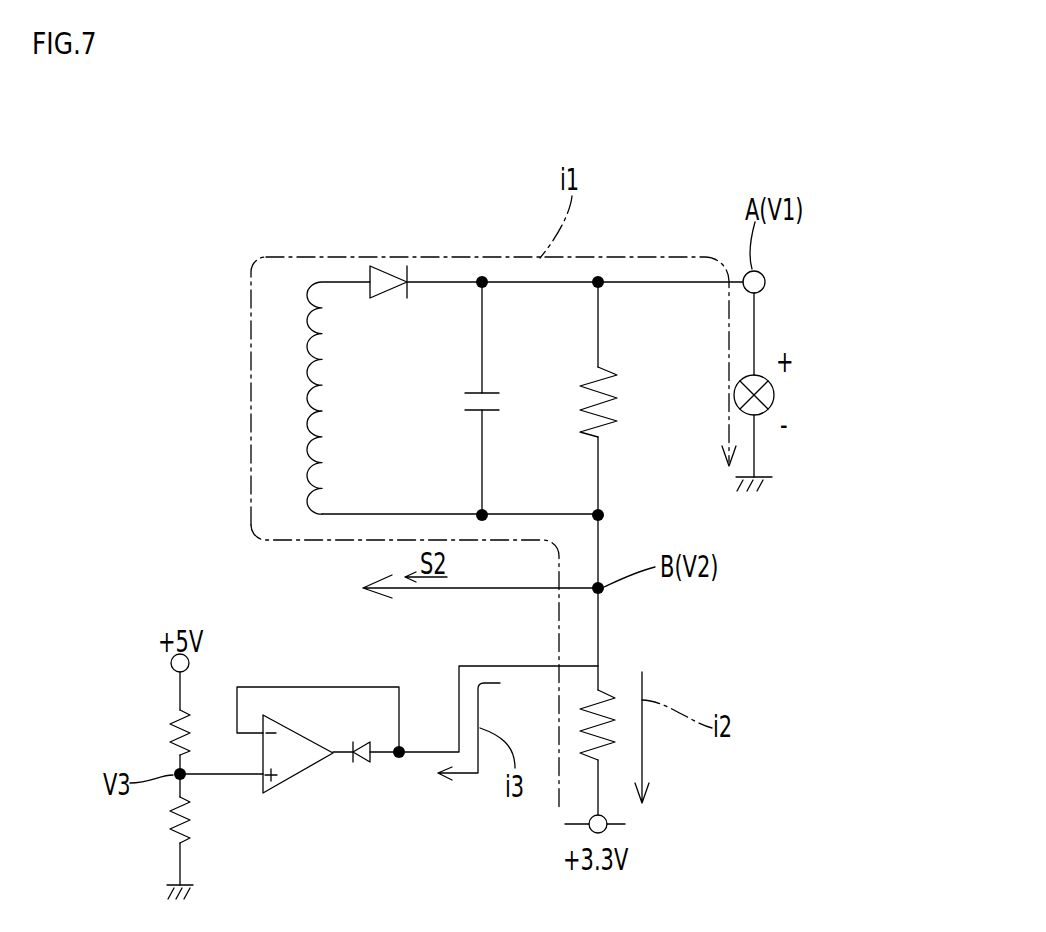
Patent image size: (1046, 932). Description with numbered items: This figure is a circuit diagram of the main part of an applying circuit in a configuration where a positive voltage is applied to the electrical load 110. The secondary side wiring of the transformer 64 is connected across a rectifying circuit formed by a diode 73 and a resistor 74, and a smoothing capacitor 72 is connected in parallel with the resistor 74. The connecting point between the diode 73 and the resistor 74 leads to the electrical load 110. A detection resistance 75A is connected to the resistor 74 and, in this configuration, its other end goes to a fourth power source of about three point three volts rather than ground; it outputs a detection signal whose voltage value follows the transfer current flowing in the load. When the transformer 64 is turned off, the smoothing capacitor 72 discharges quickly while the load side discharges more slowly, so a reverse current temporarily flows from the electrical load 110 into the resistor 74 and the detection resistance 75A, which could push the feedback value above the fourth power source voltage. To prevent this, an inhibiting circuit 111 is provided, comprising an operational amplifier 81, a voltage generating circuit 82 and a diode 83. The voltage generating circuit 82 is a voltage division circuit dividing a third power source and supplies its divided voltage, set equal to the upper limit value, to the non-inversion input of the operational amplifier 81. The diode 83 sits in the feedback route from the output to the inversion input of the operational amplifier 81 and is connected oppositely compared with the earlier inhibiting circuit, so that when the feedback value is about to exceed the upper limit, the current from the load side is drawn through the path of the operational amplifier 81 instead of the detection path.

The transformer 64 is at (305, 292).
The diode 73 is at (383, 268).
The smoothing capacitor 72 is at (470, 392).
The resistor 74 is at (607, 382).
The electrical load 110 is at (776, 393).
The detection resistance 75A is at (605, 712).
The voltage generating circuit 82 is at (211, 846).
The operational amplifier 81 is at (290, 768).
The diode 83 is at (363, 762).
The inhibiting circuit 111 is at (374, 796).